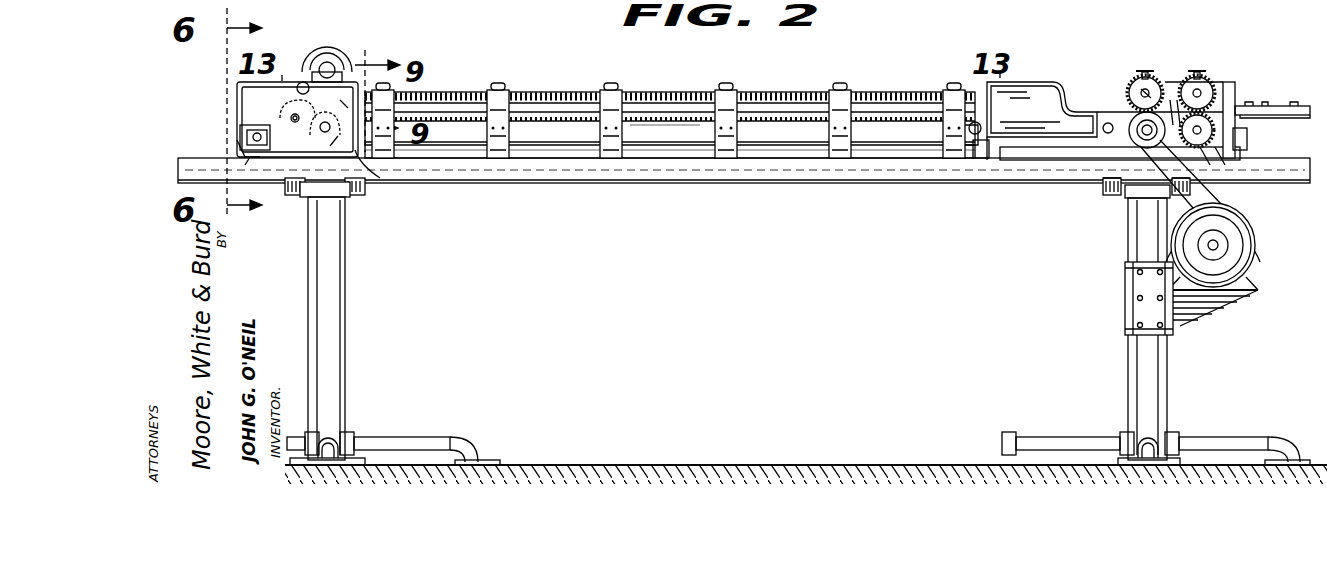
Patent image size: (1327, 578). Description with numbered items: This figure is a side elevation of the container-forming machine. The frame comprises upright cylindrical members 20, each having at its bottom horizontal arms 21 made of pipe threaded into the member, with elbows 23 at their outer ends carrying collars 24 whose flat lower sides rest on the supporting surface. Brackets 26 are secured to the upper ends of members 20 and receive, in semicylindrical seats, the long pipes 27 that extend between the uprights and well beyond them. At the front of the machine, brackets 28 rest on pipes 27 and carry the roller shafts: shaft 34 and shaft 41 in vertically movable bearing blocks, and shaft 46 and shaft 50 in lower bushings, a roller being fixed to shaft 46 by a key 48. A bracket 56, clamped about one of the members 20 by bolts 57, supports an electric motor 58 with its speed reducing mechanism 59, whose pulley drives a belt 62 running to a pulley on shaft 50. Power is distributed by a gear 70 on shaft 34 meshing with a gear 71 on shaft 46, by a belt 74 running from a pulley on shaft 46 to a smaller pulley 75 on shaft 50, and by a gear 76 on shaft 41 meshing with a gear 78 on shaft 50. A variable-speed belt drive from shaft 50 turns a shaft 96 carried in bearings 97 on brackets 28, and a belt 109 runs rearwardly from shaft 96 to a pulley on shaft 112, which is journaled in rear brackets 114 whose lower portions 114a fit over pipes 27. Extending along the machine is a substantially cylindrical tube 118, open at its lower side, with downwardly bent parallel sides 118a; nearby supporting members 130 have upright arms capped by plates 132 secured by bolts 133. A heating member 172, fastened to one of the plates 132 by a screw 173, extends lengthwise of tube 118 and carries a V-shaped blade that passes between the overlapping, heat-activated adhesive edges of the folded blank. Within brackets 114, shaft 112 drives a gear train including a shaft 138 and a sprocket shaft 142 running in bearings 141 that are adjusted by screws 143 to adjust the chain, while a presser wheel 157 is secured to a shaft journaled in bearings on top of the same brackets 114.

The cylindrical member 20 is at (345, 300).
The arm 21 is at (1190, 440).
The elbow 23 is at (1303, 440).
The collar 24 is at (1318, 464).
The bracket 26 is at (348, 196).
The cylindrical member 27 is at (545, 178).
The bracket 28 is at (1035, 90).
The shaft 34 is at (1220, 98).
The shaft 41 is at (1140, 90).
The shaft 46 is at (1247, 140).
The key 48 is at (1215, 122).
The shaft 50 is at (1132, 122).
The bracket 56 is at (1200, 300).
The bolt 57 is at (1130, 320).
The electric motor 58 is at (1240, 246).
The speed reducing mechanism 59 is at (1240, 205).
The belt 62 is at (1185, 200).
The gear 70 is at (1208, 166).
The gear 71 is at (1205, 80).
The belt 74 is at (1176, 100).
The pulley 75 is at (1108, 185).
The gear 76 is at (1138, 78).
The gear 78 is at (1140, 140).
The shaft 96 is at (990, 150).
The bearing 97 is at (962, 150).
The belt 109 is at (678, 150).
The shaft 112 is at (322, 132).
The bracket 114 is at (255, 95).
The lower portion 114a is at (275, 160).
The tube 118 is at (550, 107).
The side 118a is at (640, 125).
The supporting member 130 is at (605, 105).
The plate 132 is at (738, 90).
The bolt 133 is at (724, 86).
The shaft 138 is at (293, 122).
The bearing 141 is at (245, 160).
The shaft 142 is at (238, 134).
The screw 143 is at (244, 142).
The presser wheel 157 is at (330, 48).
The heating member 172 is at (472, 90).
The screw 173 is at (500, 85).